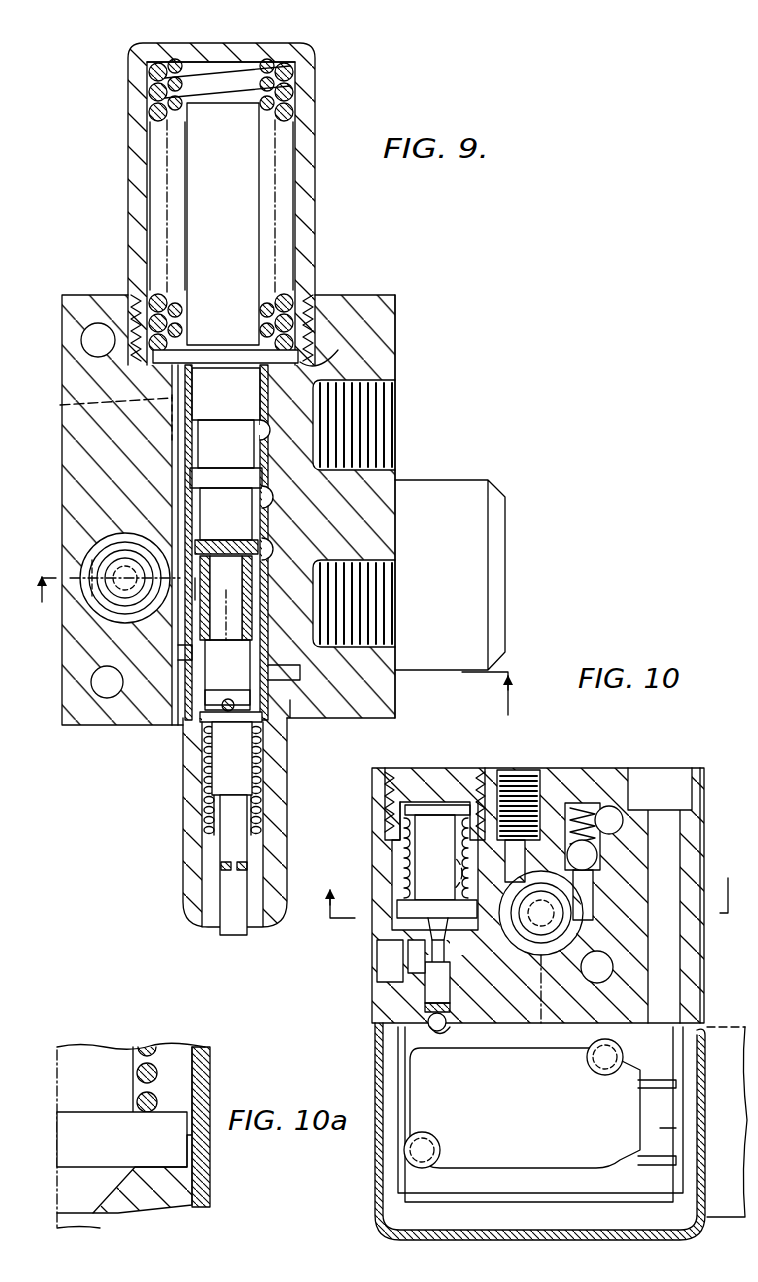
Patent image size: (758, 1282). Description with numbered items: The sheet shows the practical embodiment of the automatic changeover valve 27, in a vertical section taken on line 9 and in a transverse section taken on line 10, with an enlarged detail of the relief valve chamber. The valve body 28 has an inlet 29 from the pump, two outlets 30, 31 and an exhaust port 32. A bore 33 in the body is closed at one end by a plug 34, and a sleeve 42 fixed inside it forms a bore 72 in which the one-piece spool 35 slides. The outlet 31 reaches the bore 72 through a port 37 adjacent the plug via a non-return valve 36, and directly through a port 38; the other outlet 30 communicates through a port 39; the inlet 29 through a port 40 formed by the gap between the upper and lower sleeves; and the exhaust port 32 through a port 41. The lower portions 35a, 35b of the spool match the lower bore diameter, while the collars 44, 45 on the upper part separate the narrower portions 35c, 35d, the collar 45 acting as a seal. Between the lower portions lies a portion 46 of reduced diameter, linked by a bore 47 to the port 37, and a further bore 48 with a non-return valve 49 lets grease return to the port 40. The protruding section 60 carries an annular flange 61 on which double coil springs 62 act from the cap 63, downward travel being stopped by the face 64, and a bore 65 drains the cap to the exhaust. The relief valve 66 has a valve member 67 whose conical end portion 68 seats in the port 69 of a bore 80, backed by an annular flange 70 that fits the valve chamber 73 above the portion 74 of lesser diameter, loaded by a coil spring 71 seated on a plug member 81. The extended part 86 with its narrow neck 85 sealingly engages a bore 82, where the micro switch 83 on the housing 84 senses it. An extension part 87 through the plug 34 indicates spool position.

In FIG. 10, the section line 9- 9 is at (529, 902).
In FIG. 9, the section line 10- 10 is at (281, 661).
In FIG. 9, the automatic changeover valve 27 is at (398, 357).
In FIG. 9, the valve body 28 is at (86, 298).
In FIG. 10, the inlet 29 is at (530, 778).
In FIG. 9, the outlet 30 is at (383, 608).
In FIG. 9, the outlet 31 is at (380, 425).
In FIG. 10, the exhaust port 32 is at (538, 881).
In FIG. 9, the bore 33 is at (188, 694).
In FIG. 9, the plug 34 is at (184, 718).
In FIG. 9, the spool 35 is at (222, 580).
In FIG. 9, the lower portion of spool 35a is at (262, 690).
In FIG. 9, the lower portion of spool 35b is at (203, 592).
In FIG. 9, the narrower portion of spool 35c is at (212, 501).
In FIG. 9, the narrower portion of spool 35d is at (208, 432).
In FIG. 10, the non-return valve 36 is at (584, 856).
In FIG. 9, the port 37 is at (268, 672).
In FIG. 9, the port 38 is at (263, 431).
In FIG. 9, the port 39 is at (268, 494).
In FIG. 10, the port 40 is at (534, 858).
In FIG. 9, the port 41 is at (188, 452).
In FIG. 9, the sleeve 42 is at (195, 650).
In FIG. 9, the collar 44 is at (233, 470).
In FIG. 9, the collar 45 is at (205, 373).
In FIG. 9, the portion of reduced diameter 46 is at (262, 642).
In FIG. 9, the bore 47 is at (262, 706).
In FIG. 9, the bore 48 is at (203, 572).
In FIG. 9, the non-return valve 49 is at (228, 557).
In FIG. 9, the protruding section 60 is at (250, 140).
In FIG. 9, the annular flange 61 is at (306, 298).
In FIG. 9, the double coil springs 62 is at (268, 68).
In FIG. 9, the cap 63 is at (292, 50).
In FIG. 9, the face 64 is at (333, 342).
In FIG. 9, the bore 65 is at (102, 399).
In FIG. 10, the relief valve 66 is at (524, 935).
In FIG. 10, the valve member 67 is at (425, 850).
In FIG. 10, the conical end portion 68 is at (432, 934).
In FIG. 10, the port 69 is at (428, 940).
In FIG. 9, the annular flange 70 is at (96, 553).
In FIG. 10, the annular flange 70 is at (420, 910).
In FIG. 10a, the annular flange 70 is at (73, 1135).
In FIG. 10, the coil spring 71 is at (405, 818).
In FIG. 9, the bore 72 is at (262, 546).
In FIG. 10, the valve chamber 73 is at (466, 845).
In FIG. 10a, the valve chamber 73 is at (197, 1089).
In FIG. 10, the portion of lesser diameter 74 is at (396, 914).
In FIG. 10a, the portion of lesser diameter 74 is at (195, 1156).
In FIG. 10, the bore 80 is at (500, 1027).
In FIG. 10, the plug member 81 is at (442, 786).
In FIG. 10, the bore 82 is at (452, 1020).
In FIG. 10, the micro switch 83 is at (720, 1042).
In FIG. 10, the housing 84 is at (465, 1228).
In FIG. 10, the narrow neck 85 is at (440, 950).
In FIG. 10, the extended part 86 is at (433, 993).
In FIG. 9, the extension part 87 is at (247, 930).